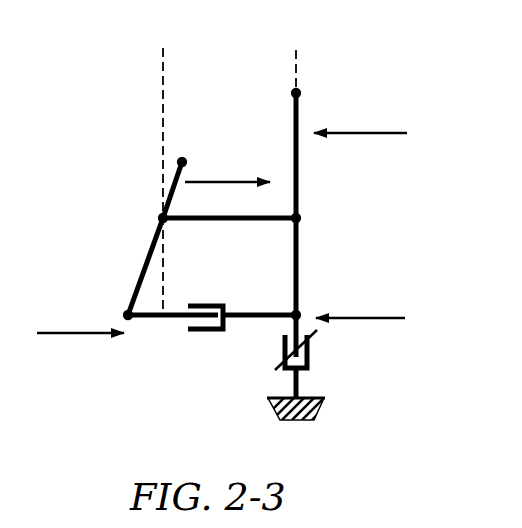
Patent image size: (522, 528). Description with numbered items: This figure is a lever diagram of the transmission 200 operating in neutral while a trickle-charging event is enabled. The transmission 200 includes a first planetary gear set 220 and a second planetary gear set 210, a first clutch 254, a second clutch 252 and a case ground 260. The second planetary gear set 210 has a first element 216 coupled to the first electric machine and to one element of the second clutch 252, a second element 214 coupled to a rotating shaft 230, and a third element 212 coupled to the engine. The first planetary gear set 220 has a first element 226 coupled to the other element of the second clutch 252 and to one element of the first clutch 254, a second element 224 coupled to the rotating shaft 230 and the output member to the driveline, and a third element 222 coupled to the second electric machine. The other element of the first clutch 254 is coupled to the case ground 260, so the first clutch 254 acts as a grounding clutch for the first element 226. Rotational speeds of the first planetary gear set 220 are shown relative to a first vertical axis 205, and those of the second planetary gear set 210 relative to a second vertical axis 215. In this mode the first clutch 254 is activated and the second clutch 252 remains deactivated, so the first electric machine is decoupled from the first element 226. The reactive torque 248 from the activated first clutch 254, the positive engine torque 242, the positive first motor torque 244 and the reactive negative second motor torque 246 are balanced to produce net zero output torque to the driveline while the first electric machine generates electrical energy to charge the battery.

The transmission 200 is at (124, 68).
The first vertical axis 205 is at (294, 50).
The second planetary gear set 210 is at (136, 174).
The third element 212 is at (185, 162).
The second element 214 is at (160, 218).
The second vertical axis 215 is at (165, 90).
The first element 216 is at (125, 315).
The first planetary gear set 220 is at (309, 75).
The third element 222 is at (299, 93).
The second element 224 is at (299, 220).
The first element 226 is at (299, 313).
The rotating shaft 230 is at (237, 221).
The engine torque 242 is at (246, 178).
The first motor torque 244 is at (98, 330).
The second motor torque 246 is at (388, 131).
The reactive torque 248 is at (390, 316).
The second clutch 252 is at (203, 331).
The first clutch 254 is at (310, 358).
The case ground 260 is at (272, 410).